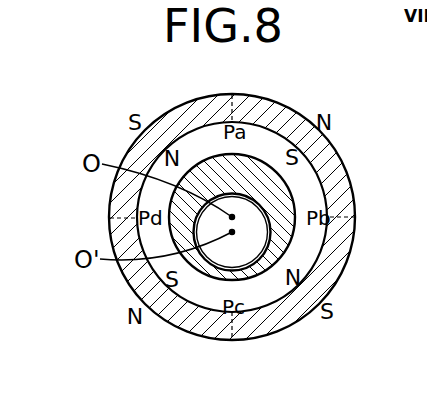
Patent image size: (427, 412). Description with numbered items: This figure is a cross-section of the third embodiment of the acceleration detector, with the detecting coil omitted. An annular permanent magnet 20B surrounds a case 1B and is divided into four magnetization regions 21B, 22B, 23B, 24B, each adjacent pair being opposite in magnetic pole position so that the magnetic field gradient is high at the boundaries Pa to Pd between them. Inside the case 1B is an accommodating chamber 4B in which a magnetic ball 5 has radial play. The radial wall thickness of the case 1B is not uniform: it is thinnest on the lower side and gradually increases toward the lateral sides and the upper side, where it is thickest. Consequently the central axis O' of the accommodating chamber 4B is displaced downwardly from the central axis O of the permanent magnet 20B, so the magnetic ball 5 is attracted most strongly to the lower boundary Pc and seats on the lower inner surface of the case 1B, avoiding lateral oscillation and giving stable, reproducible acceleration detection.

The permanent magnet 20B is at (300, 113).
The magnetization region 24B is at (170, 120).
The magnetization region 21B is at (273, 113).
The magnetization region 22B is at (347, 252).
The magnetization region 23B is at (172, 316).
The case 1B is at (289, 190).
The magnetic ball 5 is at (232, 194).
The accommodating chamber 4B is at (234, 194).